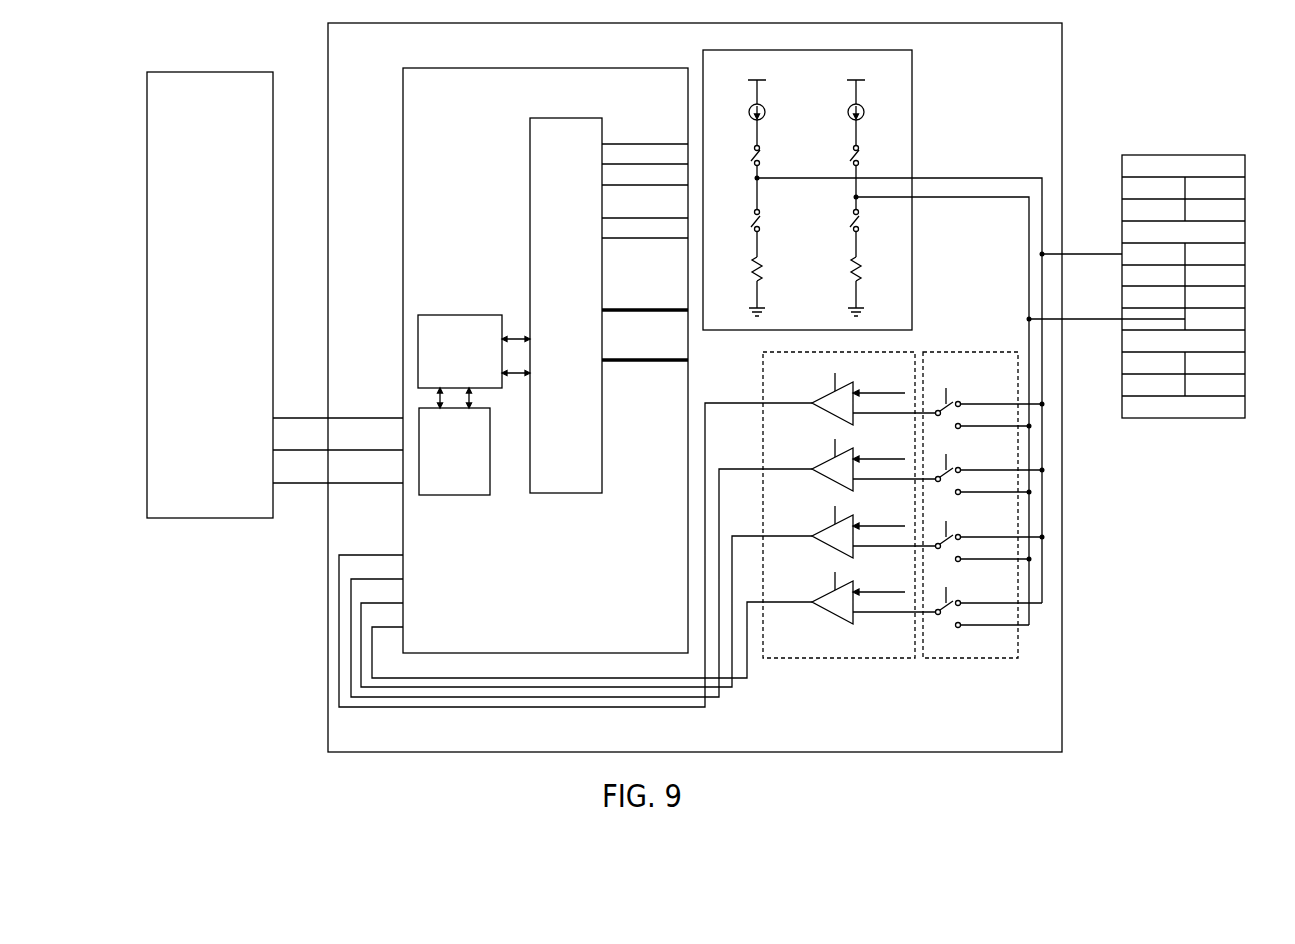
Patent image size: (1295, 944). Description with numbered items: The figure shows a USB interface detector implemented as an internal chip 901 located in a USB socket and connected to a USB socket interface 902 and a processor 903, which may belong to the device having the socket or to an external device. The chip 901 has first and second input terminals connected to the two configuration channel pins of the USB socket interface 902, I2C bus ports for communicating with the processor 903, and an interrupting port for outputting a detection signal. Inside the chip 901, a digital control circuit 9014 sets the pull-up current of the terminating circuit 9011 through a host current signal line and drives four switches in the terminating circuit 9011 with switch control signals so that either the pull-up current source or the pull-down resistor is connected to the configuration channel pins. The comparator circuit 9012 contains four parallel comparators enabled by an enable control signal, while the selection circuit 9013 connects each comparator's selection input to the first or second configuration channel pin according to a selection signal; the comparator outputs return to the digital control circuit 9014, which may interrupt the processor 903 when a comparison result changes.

The internal chip 901 is at (665, 50).
The USB socket interface 902 is at (1282, 143).
The processor 903 is at (215, 285).
The terminating circuit 9011 is at (848, 70).
The comparator circuit 9012 is at (898, 654).
The selection circuit 9013 is at (1012, 656).
The digital control circuit 9014 is at (595, 101).